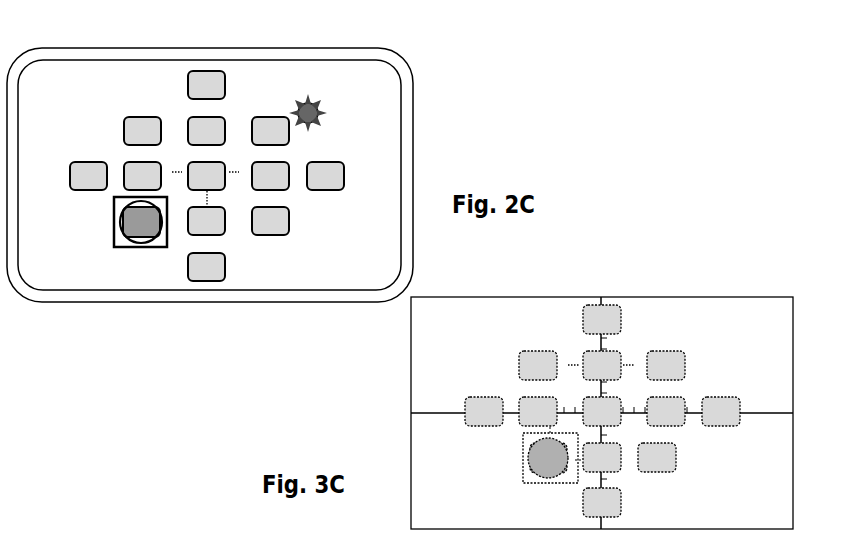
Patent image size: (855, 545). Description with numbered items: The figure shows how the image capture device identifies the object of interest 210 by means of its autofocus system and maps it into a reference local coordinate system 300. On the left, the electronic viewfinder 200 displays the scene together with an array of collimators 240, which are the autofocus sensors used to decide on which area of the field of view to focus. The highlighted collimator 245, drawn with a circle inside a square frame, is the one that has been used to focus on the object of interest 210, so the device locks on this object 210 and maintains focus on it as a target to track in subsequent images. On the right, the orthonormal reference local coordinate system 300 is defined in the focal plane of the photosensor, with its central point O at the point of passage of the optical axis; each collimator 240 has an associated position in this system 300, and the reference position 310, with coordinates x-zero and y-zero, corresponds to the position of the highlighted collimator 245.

In FIG. 2C, the electronic viewfinder 200 is at (412, 90).
In FIG. 2C, the array of collimators 240 is at (187, 87).
In FIG. 2C, the highlighted collimator 245 is at (119, 220).
In FIG. 3C, the highlighted collimator 245 is at (528, 452).
In FIG. 2C, the object of interest 210 is at (112, 234).
In FIG. 3C, the reference local coordinate system 300 is at (784, 312).
In FIG. 3C, the reference position 310 is at (561, 481).